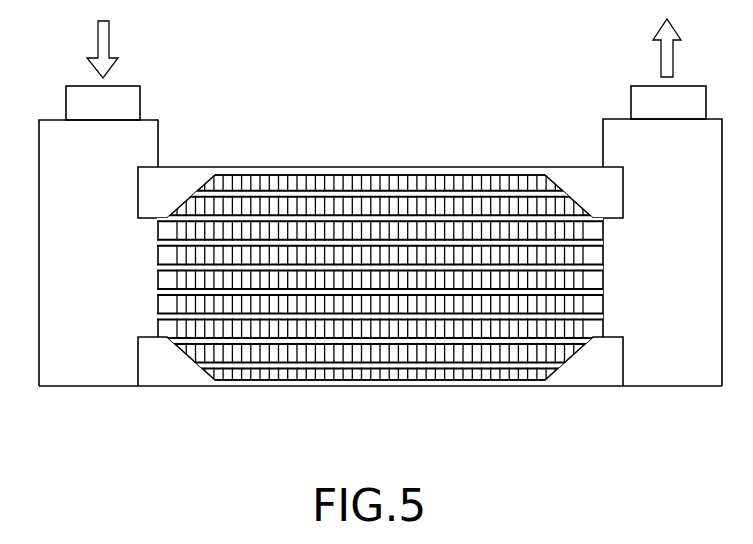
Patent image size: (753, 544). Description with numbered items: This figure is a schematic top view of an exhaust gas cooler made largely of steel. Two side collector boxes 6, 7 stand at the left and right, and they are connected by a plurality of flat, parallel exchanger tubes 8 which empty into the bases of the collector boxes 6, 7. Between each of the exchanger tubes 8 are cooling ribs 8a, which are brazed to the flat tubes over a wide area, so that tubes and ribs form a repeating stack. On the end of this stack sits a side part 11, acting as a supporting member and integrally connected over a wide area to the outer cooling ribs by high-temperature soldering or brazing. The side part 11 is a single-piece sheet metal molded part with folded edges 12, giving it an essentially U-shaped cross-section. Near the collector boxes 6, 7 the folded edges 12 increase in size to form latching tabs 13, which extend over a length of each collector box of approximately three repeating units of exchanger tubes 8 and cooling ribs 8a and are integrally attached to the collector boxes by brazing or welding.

The side collector box 6 is at (70, 142).
The side collector box 7 is at (623, 135).
The exchanger tubes 8 is at (380, 280).
The cooling ribs 8a is at (380, 246).
The side part 11 is at (380, 269).
The folded edges 12 is at (355, 170).
The latching tabs 13 is at (173, 177).